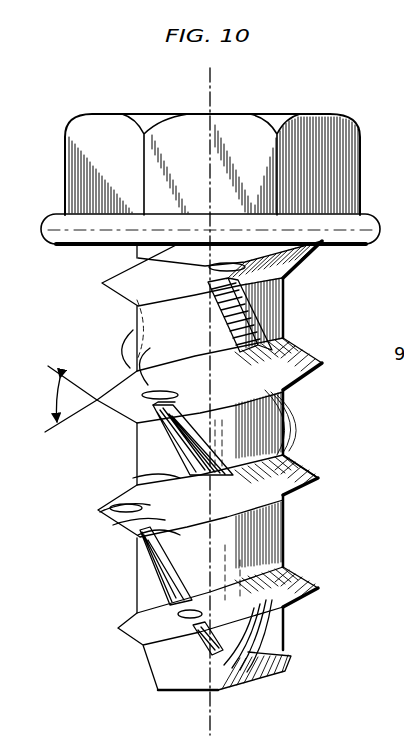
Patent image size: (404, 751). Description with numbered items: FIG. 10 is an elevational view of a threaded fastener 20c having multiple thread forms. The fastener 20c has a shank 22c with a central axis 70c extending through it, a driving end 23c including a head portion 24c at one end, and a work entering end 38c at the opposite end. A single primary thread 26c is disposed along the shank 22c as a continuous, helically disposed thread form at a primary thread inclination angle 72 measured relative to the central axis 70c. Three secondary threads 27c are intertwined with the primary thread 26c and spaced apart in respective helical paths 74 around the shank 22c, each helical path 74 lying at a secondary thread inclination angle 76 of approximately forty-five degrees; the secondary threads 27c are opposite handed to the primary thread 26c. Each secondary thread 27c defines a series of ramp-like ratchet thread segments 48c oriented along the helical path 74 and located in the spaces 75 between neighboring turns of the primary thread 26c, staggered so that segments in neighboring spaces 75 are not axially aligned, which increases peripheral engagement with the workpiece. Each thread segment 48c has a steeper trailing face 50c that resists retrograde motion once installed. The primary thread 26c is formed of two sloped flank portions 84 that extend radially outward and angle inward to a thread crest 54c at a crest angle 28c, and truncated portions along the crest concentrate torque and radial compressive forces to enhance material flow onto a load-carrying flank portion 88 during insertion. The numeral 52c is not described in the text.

The threaded fastener 20c is at (98, 106).
The shank 22c is at (130, 310).
The driving end 23c is at (333, 111).
The head portion 24c is at (80, 172).
The primary thread 26c is at (313, 460).
The secondary threads 27c is at (110, 360).
The crest angle 28c is at (55, 392).
The work entering end 38c is at (152, 690).
The thread segments 48c is at (228, 448).
The trailing face 50c is at (178, 415).
The notch wall 52c is at (113, 525).
The thread crest 54c is at (100, 512).
The central axis 70c is at (208, 706).
The primary thread inclination angle 72 is at (235, 635).
The helical path 74 is at (245, 310).
The spaces 75 is at (172, 316).
The secondary thread inclination angle 76 is at (214, 556).
The flank portions 84 is at (133, 478).
The load-carrying flank portion 88 is at (302, 487).